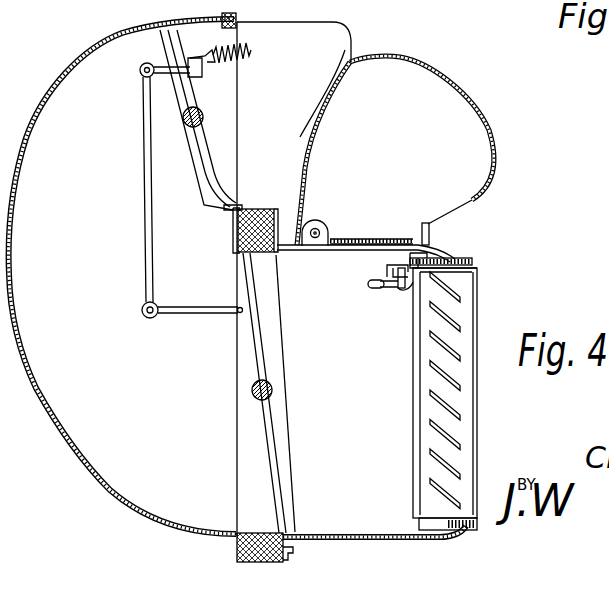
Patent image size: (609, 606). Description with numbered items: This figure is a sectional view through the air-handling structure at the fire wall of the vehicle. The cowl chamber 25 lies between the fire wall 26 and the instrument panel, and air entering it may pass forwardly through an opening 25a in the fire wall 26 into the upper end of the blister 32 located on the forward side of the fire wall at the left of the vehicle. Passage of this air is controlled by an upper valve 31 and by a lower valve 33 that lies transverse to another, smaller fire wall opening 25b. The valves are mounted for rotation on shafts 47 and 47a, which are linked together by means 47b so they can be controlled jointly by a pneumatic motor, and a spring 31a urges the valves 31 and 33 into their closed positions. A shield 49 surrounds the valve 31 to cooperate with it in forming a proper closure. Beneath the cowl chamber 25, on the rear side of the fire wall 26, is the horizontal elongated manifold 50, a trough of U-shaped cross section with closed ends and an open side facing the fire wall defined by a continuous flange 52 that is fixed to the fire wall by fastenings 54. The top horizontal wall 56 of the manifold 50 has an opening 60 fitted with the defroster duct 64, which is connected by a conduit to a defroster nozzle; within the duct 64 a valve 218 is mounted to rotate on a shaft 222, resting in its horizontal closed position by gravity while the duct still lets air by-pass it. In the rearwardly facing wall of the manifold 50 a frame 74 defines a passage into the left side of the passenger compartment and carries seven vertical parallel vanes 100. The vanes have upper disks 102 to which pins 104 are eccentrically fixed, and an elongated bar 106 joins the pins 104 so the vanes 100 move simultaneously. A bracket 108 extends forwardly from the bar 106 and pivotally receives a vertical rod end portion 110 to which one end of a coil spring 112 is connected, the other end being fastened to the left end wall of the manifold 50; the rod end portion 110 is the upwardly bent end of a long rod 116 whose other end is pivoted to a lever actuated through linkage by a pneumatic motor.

The cowl chamber 25 is at (340, 44).
The opening 25a is at (302, 138).
The fire wall opening 25b is at (290, 500).
The fire wall 26 is at (253, 209).
The upper valve 31 is at (197, 110).
The spring 31a is at (250, 50).
The blister 32 is at (88, 470).
The lower valve 33 is at (272, 447).
The shaft 47 is at (203, 120).
The shaft 47a is at (257, 396).
The linking means 47b is at (146, 215).
The shield 49 is at (228, 212).
The manifold 50 is at (437, 257).
The flange 52 is at (276, 240).
The fastenings 54 is at (292, 553).
The top wall 56 is at (289, 252).
The opening 60 is at (328, 254).
The defroster duct 64 is at (493, 163).
The frame 74 is at (472, 265).
The vanes 100 is at (422, 388).
The upper disks 102 is at (477, 268).
The pins 104 is at (410, 256).
The bar 106 is at (418, 282).
The bracket 108 is at (402, 290).
The rod end portion 110 is at (388, 270).
The coil spring 112 is at (400, 289).
The rod 116 is at (372, 290).
The valve 218 is at (343, 241).
The shaft 222 is at (318, 220).